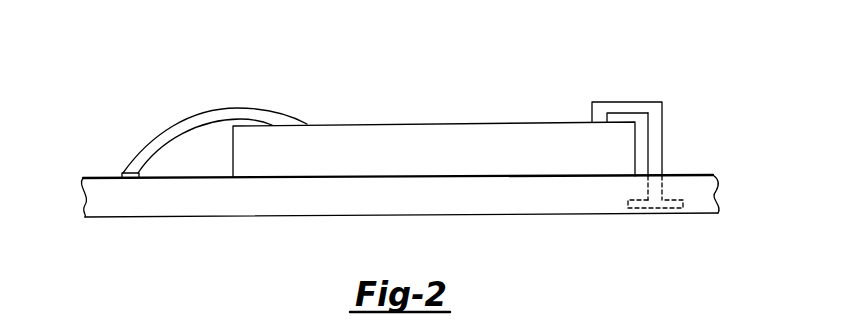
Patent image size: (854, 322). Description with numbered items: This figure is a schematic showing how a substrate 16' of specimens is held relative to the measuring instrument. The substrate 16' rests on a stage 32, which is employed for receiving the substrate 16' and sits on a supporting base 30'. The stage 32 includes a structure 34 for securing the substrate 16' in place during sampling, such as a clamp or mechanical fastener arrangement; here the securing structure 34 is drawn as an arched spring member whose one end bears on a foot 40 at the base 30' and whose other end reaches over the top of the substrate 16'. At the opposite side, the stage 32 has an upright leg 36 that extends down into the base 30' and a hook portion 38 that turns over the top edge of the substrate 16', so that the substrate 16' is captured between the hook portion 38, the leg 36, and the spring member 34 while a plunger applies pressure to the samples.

The substrate 30' is at (431, 204).
The component body 16' is at (434, 121).
The structure for securing the substrate 34 is at (202, 102).
The contact foot 40 is at (142, 154).
The stage 32 is at (661, 100).
The hook portion 38 is at (605, 117).
The vertical leg 36 is at (663, 140).